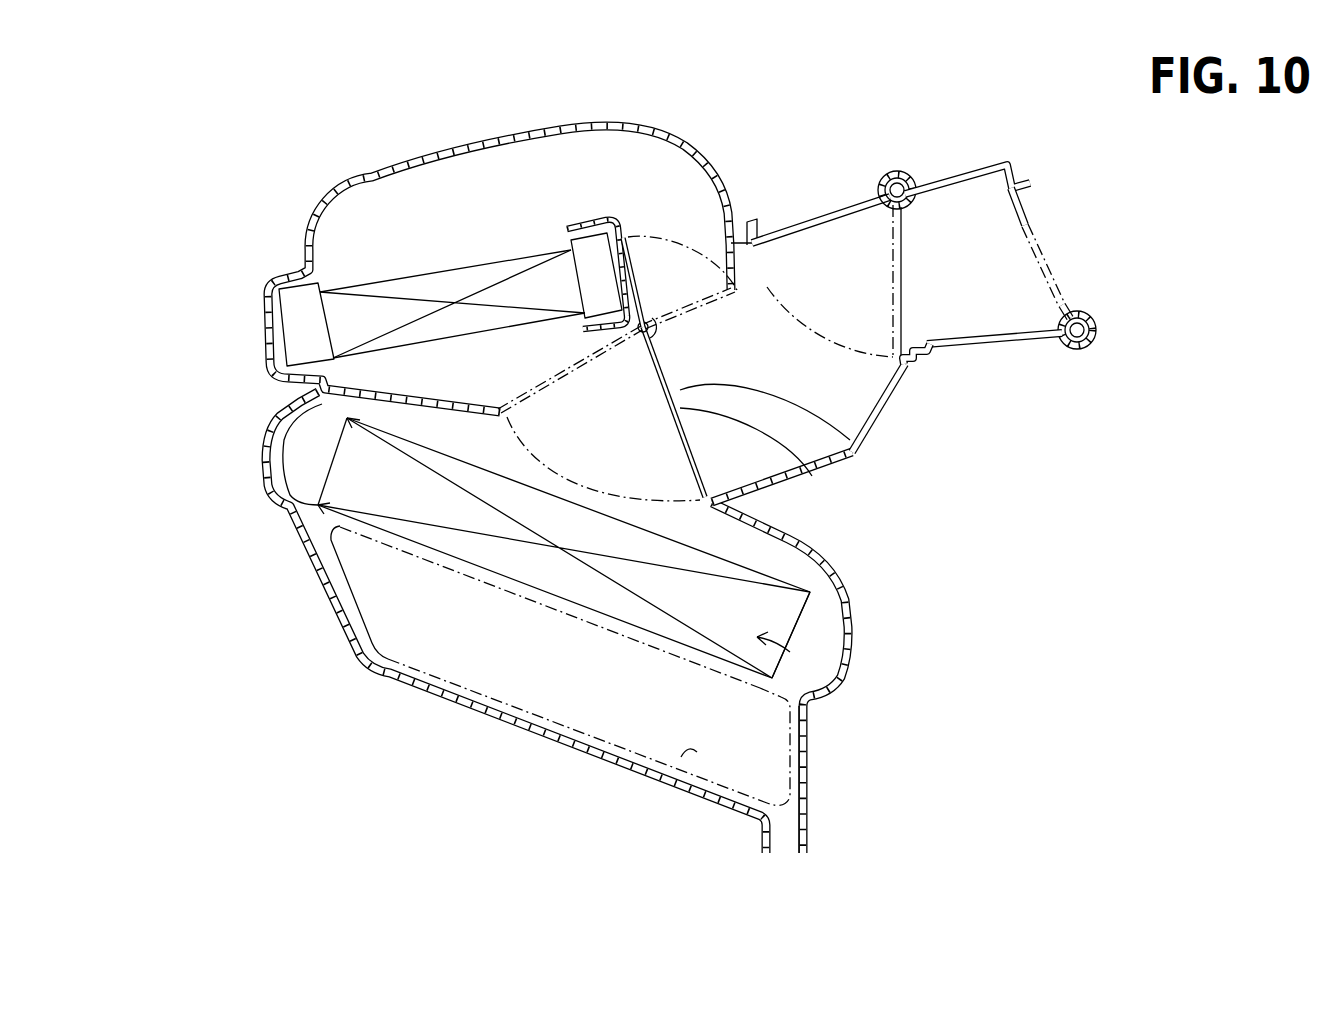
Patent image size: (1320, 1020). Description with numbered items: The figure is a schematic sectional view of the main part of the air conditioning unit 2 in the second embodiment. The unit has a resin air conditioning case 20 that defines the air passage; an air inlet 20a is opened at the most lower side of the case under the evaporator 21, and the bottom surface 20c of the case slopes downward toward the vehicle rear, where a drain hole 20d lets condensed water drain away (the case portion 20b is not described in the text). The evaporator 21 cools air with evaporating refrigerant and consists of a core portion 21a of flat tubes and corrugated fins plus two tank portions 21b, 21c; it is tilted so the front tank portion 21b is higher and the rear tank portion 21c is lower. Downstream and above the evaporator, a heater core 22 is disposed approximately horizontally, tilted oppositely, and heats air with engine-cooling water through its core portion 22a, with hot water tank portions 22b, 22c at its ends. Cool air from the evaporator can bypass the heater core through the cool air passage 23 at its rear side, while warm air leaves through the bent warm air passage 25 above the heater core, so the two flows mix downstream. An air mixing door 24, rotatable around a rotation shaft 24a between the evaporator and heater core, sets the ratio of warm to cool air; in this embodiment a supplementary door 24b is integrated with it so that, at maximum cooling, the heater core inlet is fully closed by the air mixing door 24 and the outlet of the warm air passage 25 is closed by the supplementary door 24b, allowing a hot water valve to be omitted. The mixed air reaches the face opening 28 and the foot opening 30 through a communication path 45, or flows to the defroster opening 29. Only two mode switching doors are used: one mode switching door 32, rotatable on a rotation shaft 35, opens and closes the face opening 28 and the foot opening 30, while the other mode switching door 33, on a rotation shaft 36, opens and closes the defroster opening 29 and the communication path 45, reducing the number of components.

The air conditioning unit 2 is at (526, 134).
The air conditioning case 20 is at (423, 158).
The air inlet 20a is at (691, 768).
The case inner wall 20b is at (613, 695).
The bottom surface 20c is at (567, 745).
The drain hole 20d is at (783, 840).
The evaporator 21 is at (807, 682).
The core portion 21a is at (417, 503).
The tank portion 21b is at (310, 460).
The tank portion 21c is at (807, 640).
The heater core 22 is at (450, 277).
The core portion 22a is at (417, 286).
The tank portion 22b is at (297, 328).
The tank portion 22c is at (587, 250).
The cool air passage 23 is at (847, 440).
The air mixing door 24 is at (808, 478).
The rotation shaft 24a is at (648, 318).
The supplementary door 24b is at (628, 237).
The warm air passage 25 is at (482, 197).
The face opening 28 is at (1033, 203).
The defroster opening 29 is at (827, 200).
The foot opening 30 is at (1031, 348).
The mode switching door 32 is at (974, 350).
The mode switching door 33 is at (789, 216).
The rotation shaft 35 is at (1097, 333).
The rotation shaft 36 is at (897, 171).
The communication path 45 is at (907, 257).